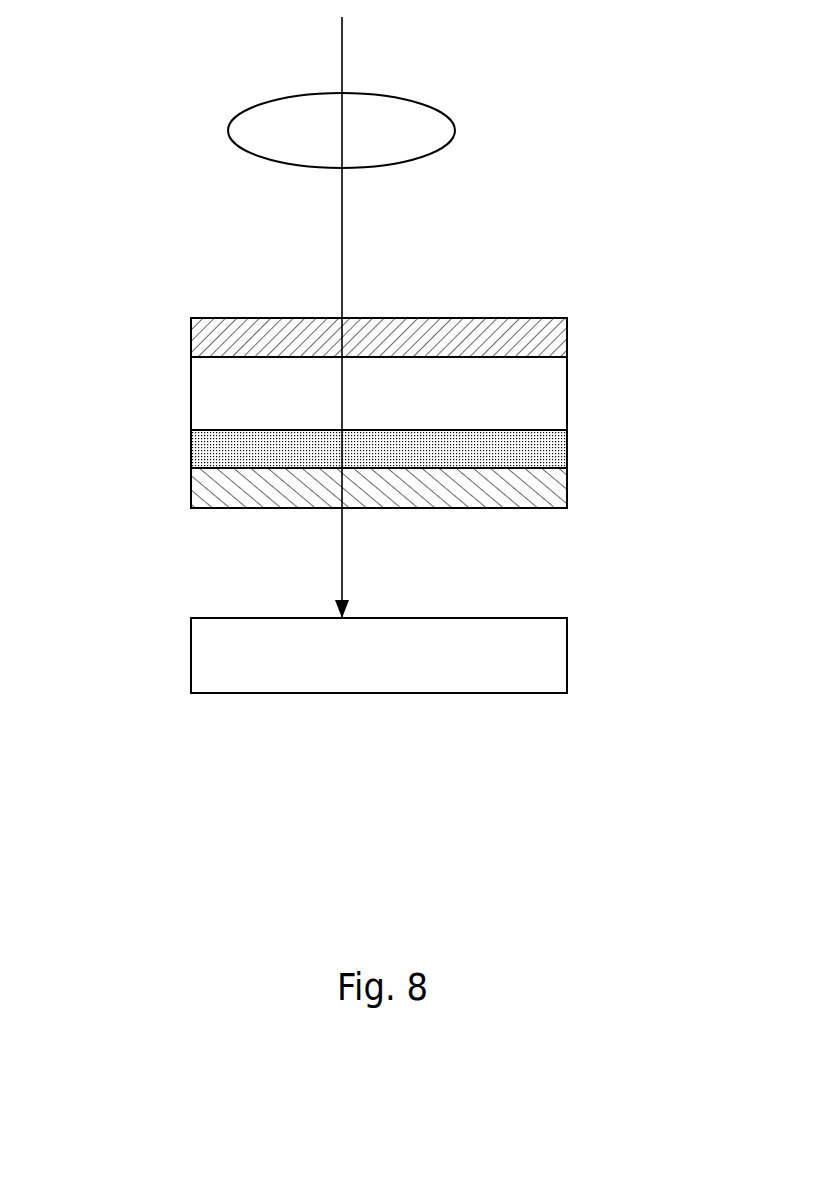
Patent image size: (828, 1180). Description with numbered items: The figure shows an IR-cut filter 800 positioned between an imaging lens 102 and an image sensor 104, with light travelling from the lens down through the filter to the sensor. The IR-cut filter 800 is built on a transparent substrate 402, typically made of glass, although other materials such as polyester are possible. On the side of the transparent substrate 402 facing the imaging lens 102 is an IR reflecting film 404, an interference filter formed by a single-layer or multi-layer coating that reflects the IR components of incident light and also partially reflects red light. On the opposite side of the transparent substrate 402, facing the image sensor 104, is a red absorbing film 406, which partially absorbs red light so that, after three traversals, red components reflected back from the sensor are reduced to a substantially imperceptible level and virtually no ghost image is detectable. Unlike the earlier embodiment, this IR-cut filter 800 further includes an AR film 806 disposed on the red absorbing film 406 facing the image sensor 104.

The imaging lens 102 is at (341, 130).
The image sensor 104 is at (379, 655).
The transparent substrate 402 is at (191, 393).
The IR reflecting film 404 is at (191, 337).
The red absorbing film 406 is at (191, 447).
The AR film 806 is at (191, 493).
The IR-cut filter 800 is at (567, 393).